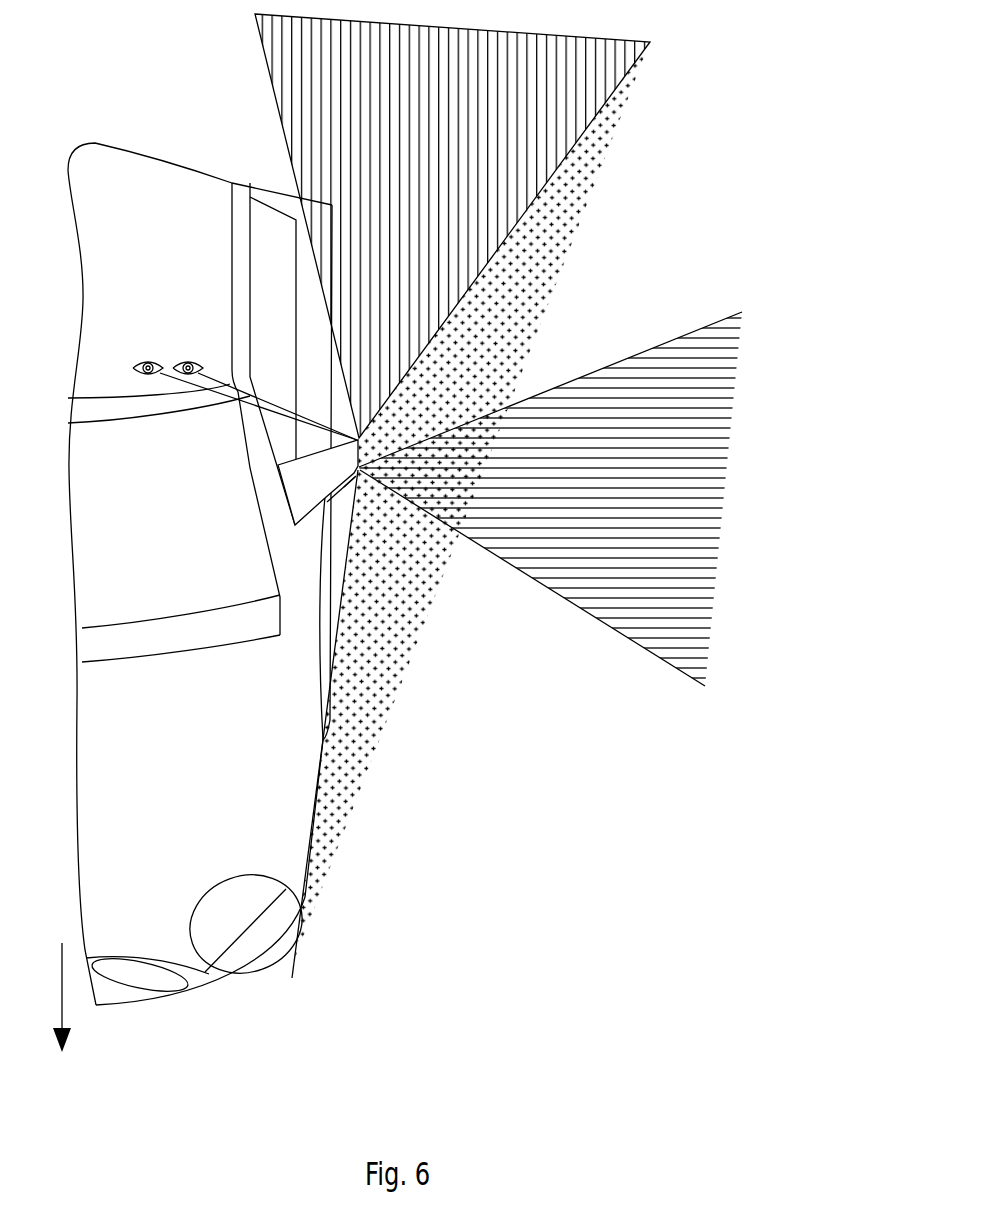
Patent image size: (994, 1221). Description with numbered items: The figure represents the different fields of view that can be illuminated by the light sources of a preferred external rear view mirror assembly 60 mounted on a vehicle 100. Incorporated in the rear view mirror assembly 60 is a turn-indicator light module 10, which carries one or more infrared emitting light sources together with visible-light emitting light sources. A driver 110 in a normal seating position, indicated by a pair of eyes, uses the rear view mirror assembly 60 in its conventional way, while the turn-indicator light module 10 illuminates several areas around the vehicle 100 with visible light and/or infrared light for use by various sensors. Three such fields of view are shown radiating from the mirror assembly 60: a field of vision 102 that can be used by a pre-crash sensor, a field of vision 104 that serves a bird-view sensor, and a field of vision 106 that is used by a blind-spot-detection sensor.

The turn-indicator light module 10 is at (347, 502).
The rear view mirror assembly 60 is at (324, 492).
The vehicle 100 is at (170, 849).
The field of vision 102 is at (636, 489).
The field of vision 104 is at (485, 371).
The field of vision 106 is at (454, 152).
The driver 110 is at (171, 330).